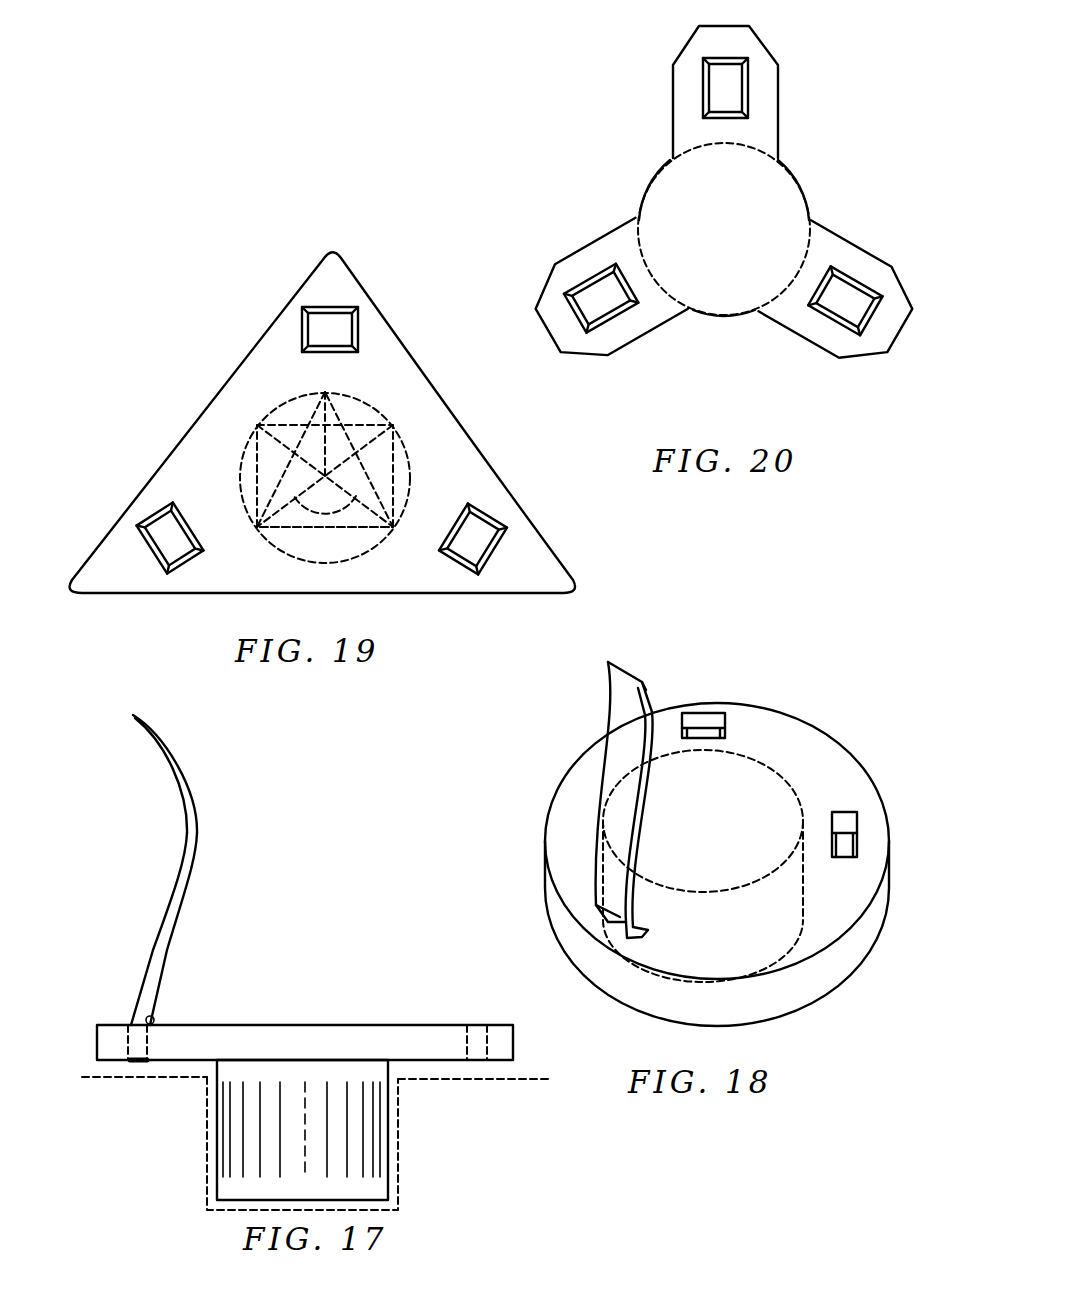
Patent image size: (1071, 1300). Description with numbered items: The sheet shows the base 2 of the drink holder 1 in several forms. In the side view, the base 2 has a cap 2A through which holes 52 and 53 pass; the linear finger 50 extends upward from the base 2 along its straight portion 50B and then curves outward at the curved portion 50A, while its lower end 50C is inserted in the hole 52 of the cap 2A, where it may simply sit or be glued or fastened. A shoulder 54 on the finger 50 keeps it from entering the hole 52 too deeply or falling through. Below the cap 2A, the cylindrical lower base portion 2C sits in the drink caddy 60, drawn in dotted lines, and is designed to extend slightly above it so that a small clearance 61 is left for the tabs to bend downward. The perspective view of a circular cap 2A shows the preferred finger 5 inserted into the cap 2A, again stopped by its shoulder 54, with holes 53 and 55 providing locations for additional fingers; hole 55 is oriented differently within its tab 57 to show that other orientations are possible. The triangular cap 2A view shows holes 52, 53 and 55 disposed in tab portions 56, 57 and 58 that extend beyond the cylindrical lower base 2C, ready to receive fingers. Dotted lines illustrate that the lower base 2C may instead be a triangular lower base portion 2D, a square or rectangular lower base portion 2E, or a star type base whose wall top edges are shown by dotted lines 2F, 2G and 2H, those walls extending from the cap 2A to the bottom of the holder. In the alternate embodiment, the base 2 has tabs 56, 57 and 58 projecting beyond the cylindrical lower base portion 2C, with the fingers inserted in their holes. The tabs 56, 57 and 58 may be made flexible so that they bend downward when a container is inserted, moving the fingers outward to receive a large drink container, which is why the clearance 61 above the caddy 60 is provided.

In FIG. 18, the container 1 is at (748, 646).
In FIG. 20, the base 2 is at (603, 125).
In FIG. 18, the base 2 is at (857, 718).
In FIG. 17, the base 2 is at (387, 996).
In FIG. 19, the cap 2A is at (178, 440).
In FIG. 18, the cap 2A is at (760, 742).
In FIG. 17, the cap 2A is at (200, 1053).
In FIG. 20, the cylindrical lower base portion 2C is at (808, 193).
In FIG. 19, the cylindrical lower base portion 2C is at (401, 515).
In FIG. 18, the cylindrical lower base portion 2C is at (802, 912).
In FIG. 17, the cylindrical lower base portion 2C is at (388, 1145).
In FIG. 19, the triangular lower base portion 2D is at (393, 425).
In FIG. 19, the square or rectangular lower base portion 2E is at (403, 442).
In FIG. 19, the dotted line of star type base 2F is at (280, 405).
In FIG. 19, the dotted line of star type base 2G is at (257, 425).
In FIG. 19, the dotted line of star type base 2H is at (243, 457).
In FIG. 18, the finger 5 is at (625, 747).
In FIG. 17, the finger 50 is at (162, 840).
In FIG. 17, the curved portion 50A is at (163, 753).
In FIG. 17, the straight portion of lever 50B is at (147, 952).
In FIG. 17, the end of finger 50C is at (132, 1058).
In FIG. 20, the hole 52 is at (604, 296).
In FIG. 19, the hole 52 is at (143, 523).
In FIG. 17, the hole 52 is at (128, 1040).
In FIG. 20, the hole 53 is at (845, 308).
In FIG. 19, the hole 53 is at (477, 537).
In FIG. 18, the hole 53 is at (845, 847).
In FIG. 17, the hole 53 is at (475, 1030).
In FIG. 18, the shoulder 54 is at (630, 930).
In FIG. 17, the shoulder 54 is at (155, 1020).
In FIG. 20, the hole 55 is at (730, 92).
In FIG. 19, the hole 55 is at (328, 328).
In FIG. 18, the hole 55 is at (703, 730).
In FIG. 20, the tab portion 56 is at (551, 294).
In FIG. 19, the tab portion 56 is at (128, 568).
In FIG. 20, the tab portion 57 is at (732, 42).
In FIG. 19, the tab portion 57 is at (275, 355).
In FIG. 20, the tab portion 58 is at (822, 261).
In FIG. 19, the tab portion 58 is at (530, 565).
In FIG. 17, the drink caddy 60 is at (400, 1195).
In FIG. 17, the clearance 61 is at (492, 1071).